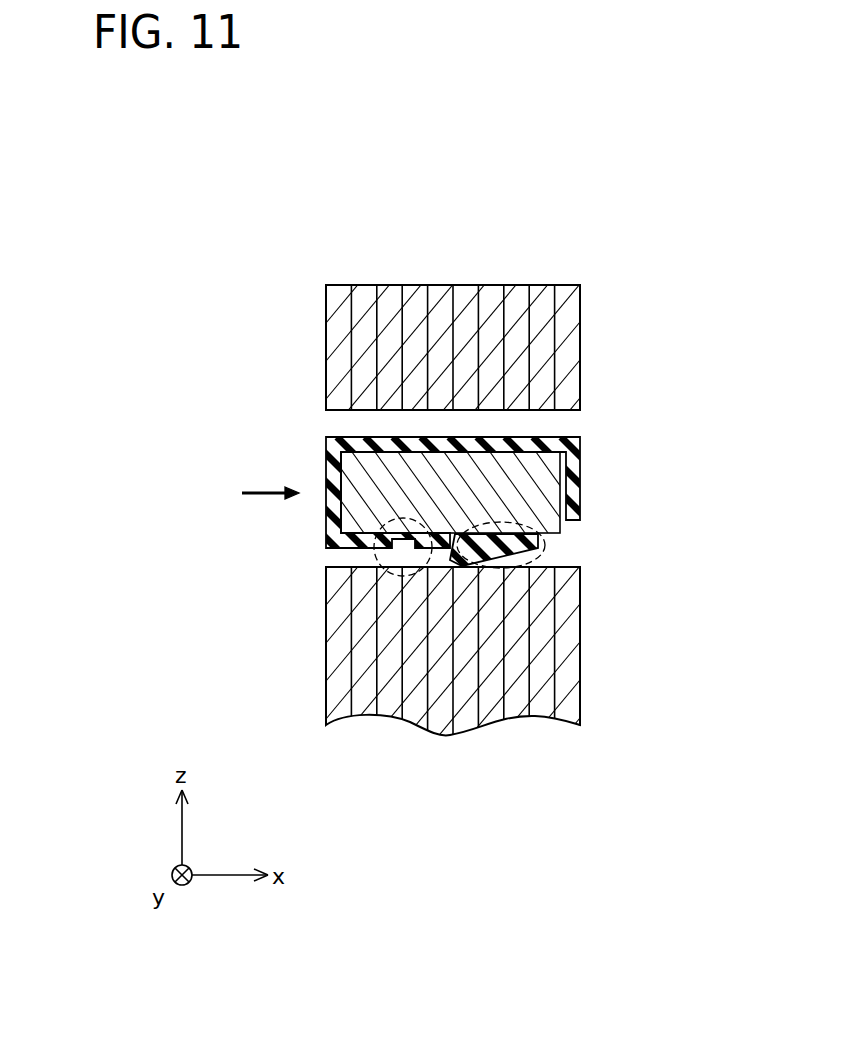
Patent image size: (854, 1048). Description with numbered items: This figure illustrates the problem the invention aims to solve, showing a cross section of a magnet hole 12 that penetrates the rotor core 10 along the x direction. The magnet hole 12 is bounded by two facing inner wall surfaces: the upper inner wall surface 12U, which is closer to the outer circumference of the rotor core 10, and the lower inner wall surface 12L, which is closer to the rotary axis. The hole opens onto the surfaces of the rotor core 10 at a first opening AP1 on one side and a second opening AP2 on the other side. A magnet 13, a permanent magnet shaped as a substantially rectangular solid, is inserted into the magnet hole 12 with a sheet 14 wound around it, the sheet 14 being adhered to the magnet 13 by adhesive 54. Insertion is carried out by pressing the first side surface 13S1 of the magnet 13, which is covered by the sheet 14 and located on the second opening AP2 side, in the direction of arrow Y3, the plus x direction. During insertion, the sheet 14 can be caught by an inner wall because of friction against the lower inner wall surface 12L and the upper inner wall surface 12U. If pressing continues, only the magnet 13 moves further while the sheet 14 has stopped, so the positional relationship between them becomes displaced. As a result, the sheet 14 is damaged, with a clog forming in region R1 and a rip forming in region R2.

The rotor core 10 is at (440, 520).
The magnet hole 12 is at (466, 520).
The upper inner wall surface 12U is at (540, 410).
The lower inner wall surface 12L is at (537, 566).
The sheet 14 is at (445, 503).
The magnet 13 is at (389, 520).
The first side surface 13S1 is at (340, 510).
The adhesive 54 is at (560, 536).
The region R1 is at (540, 570).
The region R2 is at (387, 572).
The first opening AP1 is at (602, 394).
The second opening AP2 is at (273, 415).
The arrow Y3 is at (268, 490).